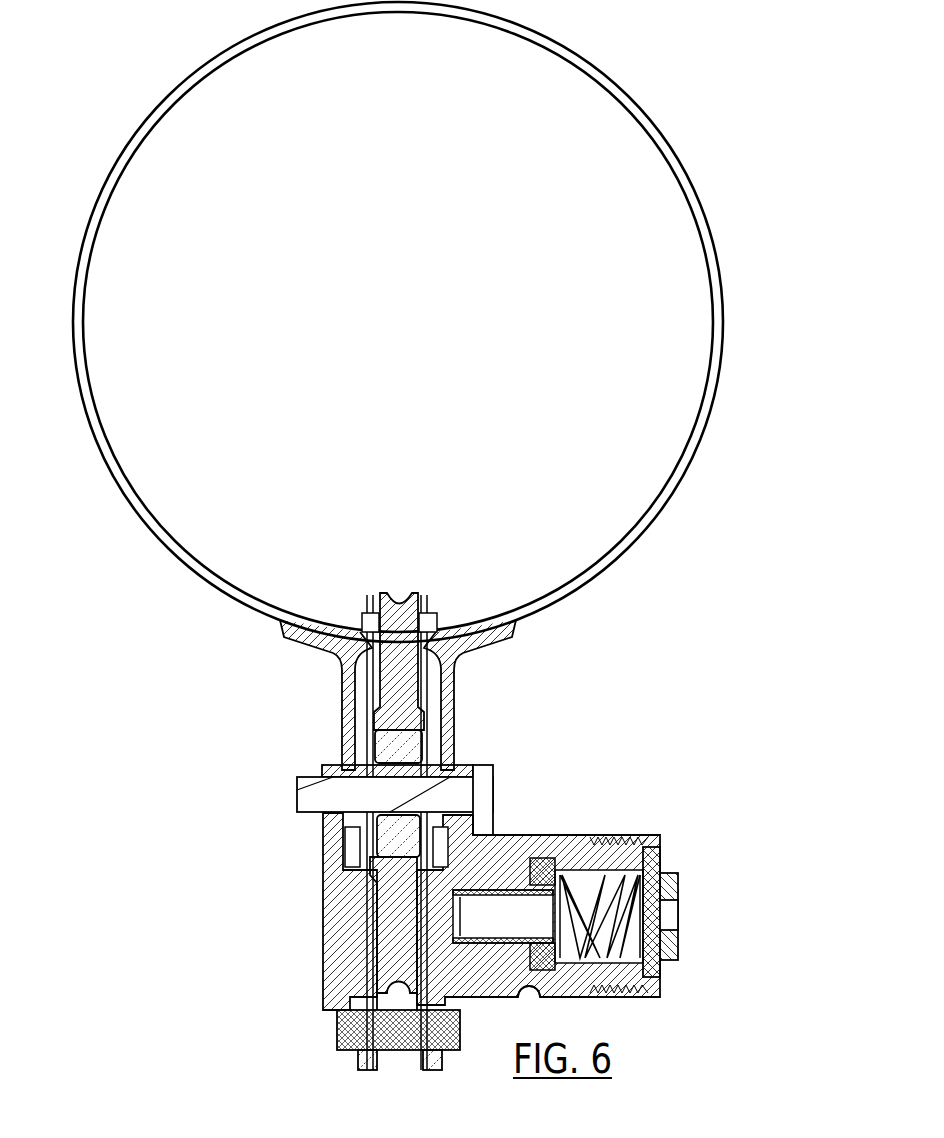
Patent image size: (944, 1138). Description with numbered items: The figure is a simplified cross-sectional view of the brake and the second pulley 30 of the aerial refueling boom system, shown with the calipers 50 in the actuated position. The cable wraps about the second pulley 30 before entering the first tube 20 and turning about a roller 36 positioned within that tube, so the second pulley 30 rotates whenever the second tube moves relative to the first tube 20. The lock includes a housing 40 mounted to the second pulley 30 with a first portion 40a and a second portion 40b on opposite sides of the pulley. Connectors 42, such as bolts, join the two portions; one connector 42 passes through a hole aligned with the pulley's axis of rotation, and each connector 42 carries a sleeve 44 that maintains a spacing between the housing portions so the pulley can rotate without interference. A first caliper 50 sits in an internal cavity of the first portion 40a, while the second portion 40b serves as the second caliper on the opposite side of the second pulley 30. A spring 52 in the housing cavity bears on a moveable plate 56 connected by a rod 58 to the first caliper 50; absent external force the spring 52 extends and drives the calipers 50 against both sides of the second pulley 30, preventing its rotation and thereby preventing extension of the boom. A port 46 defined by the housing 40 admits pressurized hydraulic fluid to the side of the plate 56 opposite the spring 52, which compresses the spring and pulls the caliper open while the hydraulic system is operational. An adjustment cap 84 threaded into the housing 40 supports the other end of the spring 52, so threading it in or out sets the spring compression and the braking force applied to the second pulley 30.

The first tube 20 is at (578, 60).
The second pulley 30 is at (385, 912).
The roller 36 is at (413, 612).
The housing 40 is at (459, 887).
The first portion of the housing 40a is at (497, 838).
The second portion of the housing 40b is at (325, 848).
The connector 42 is at (462, 790).
The sleeve 44 is at (402, 767).
The port 46 is at (530, 996).
The caliper 50 is at (375, 955).
The spring 52 is at (612, 880).
The plate 56 is at (555, 960).
The rod 58 is at (510, 890).
The adjustment cap 84 is at (655, 852).